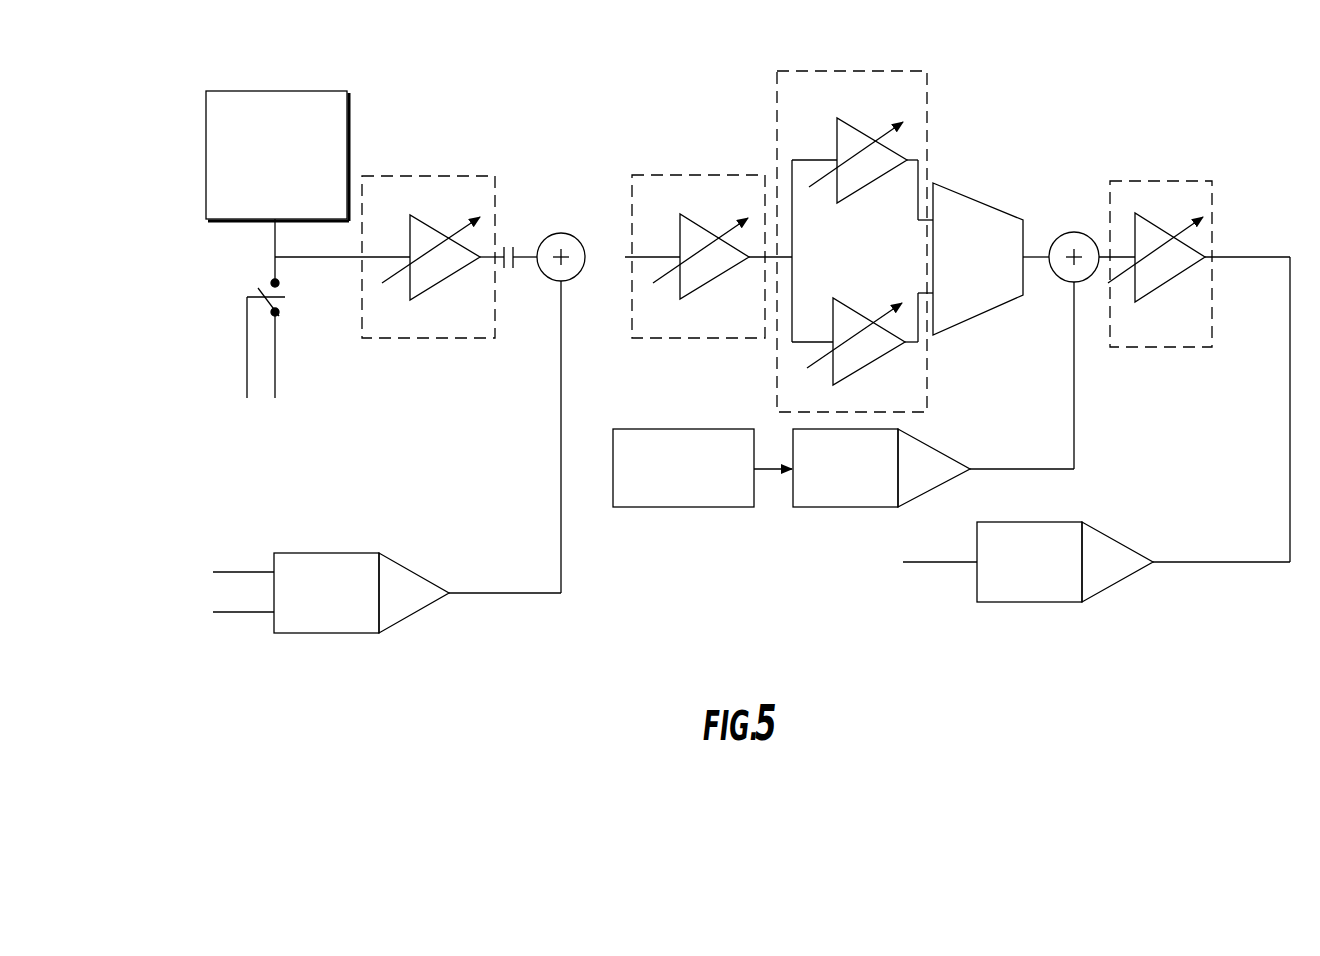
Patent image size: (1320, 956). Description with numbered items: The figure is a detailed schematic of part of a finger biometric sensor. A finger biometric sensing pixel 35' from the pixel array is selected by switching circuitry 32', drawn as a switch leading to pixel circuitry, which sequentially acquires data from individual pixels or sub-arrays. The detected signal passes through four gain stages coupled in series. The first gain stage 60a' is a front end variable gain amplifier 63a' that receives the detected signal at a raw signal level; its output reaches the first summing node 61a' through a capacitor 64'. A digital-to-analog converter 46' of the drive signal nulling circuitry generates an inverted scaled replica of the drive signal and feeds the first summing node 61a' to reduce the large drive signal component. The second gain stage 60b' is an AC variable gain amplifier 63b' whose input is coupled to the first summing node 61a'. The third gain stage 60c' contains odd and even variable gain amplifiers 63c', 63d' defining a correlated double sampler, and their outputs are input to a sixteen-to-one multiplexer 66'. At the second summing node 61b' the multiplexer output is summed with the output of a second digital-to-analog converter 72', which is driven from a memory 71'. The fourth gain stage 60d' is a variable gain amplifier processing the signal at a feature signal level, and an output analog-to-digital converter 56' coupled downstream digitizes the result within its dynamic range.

The finger biometric sensing pixel 35' is at (241, 145).
The switching circuitry 32' is at (221, 339).
The first gain stage 60a' is at (428, 220).
The variable gain amplifier 63a' is at (433, 210).
The capacitor 64' is at (521, 165).
The first summing node 61a' is at (549, 228).
The digital-to-analog converter 46' is at (331, 615).
The second gain stage 60b' is at (698, 222).
The variable gain amplifier 63b' is at (703, 211).
The third gain stage 60c' is at (847, 215).
The odd variable gain amplifier 63c' is at (1007, 200).
The even variable gain amplifier 63d' is at (898, 354).
The multiplexer 66' is at (978, 235).
The second summing node 61b' is at (1063, 226).
The fourth gain stage 60d' is at (1161, 227).
The memory 71' is at (683, 488).
The second digital-to-analog converter 72' is at (881, 488).
The output analog-to-digital converter 56' is at (1065, 585).